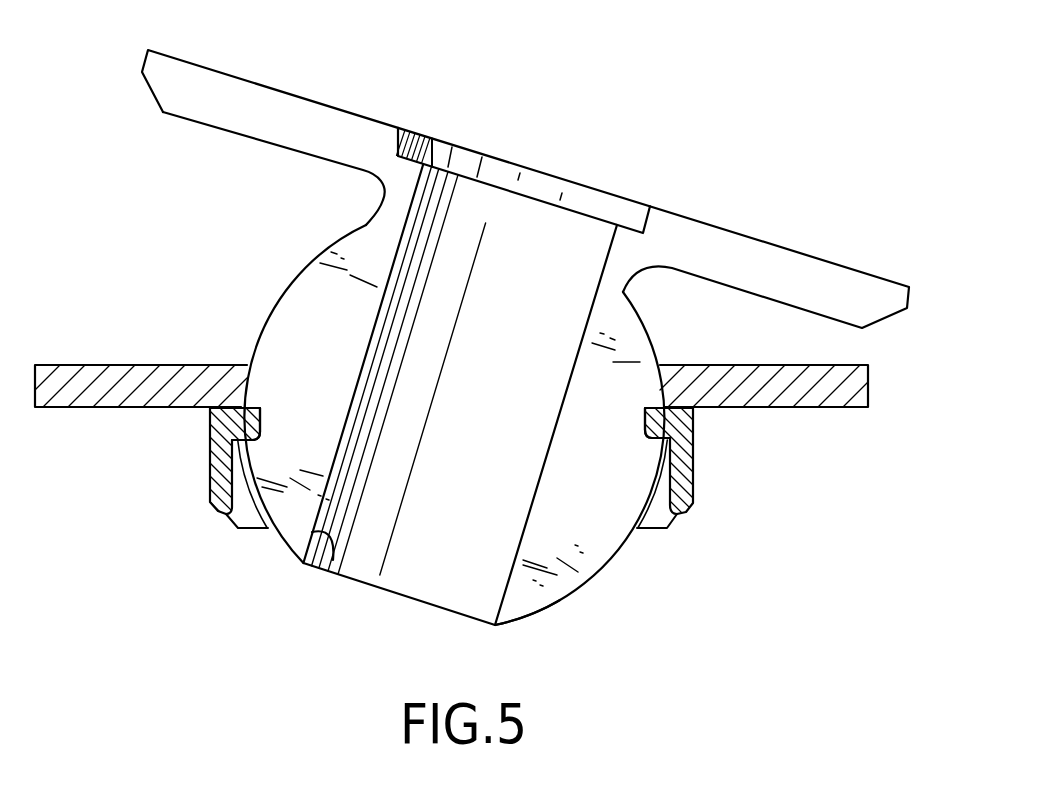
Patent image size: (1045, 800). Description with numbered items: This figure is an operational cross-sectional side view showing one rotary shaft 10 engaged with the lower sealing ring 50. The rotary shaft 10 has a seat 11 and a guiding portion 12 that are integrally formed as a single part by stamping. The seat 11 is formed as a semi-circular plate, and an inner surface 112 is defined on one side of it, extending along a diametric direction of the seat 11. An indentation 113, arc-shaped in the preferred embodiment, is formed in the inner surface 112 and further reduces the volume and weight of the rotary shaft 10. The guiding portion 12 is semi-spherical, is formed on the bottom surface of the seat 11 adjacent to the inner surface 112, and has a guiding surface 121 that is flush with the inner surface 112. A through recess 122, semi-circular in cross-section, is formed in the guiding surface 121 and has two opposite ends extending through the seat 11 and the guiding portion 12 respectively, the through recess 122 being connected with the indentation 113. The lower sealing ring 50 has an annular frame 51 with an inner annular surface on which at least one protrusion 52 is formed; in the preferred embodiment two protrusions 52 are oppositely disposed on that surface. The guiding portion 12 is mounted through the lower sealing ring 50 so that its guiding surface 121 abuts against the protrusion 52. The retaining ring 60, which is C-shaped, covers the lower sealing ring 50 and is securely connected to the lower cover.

The rotary shaft 10 is at (629, 155).
The seat 11 is at (787, 247).
The inner surface 112 is at (215, 93).
The indentation 113 is at (413, 150).
The guiding portion 12 is at (280, 295).
The guiding surface 121 is at (583, 565).
The through recess 122 is at (333, 560).
The lower sealing ring 50 is at (719, 450).
The annular frame 51 is at (680, 497).
The protrusion 52 is at (248, 420).
The retaining ring 60 is at (803, 392).